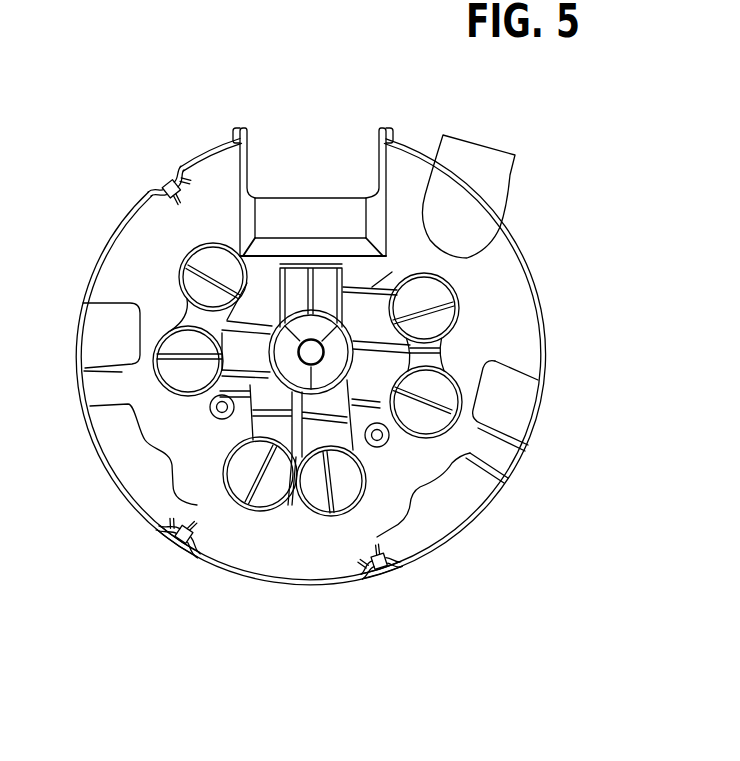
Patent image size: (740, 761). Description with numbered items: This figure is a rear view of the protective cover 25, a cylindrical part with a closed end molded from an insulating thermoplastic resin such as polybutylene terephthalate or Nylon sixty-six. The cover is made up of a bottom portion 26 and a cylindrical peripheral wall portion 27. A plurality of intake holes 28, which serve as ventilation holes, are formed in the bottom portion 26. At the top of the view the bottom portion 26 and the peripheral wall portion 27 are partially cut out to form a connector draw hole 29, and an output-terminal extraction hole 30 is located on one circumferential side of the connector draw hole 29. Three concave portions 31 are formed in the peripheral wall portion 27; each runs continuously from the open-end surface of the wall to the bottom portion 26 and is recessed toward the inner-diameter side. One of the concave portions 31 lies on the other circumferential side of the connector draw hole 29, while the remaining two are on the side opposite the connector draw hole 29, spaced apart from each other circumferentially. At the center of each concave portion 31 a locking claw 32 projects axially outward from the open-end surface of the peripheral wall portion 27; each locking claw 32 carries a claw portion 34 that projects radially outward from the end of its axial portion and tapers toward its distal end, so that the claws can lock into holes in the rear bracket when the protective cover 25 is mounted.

The protective cover 25 is at (96, 94).
The bottom portion 26 is at (498, 284).
The peripheral wall portion 27 is at (546, 316).
The intake holes 28 is at (197, 283).
The connector draw hole 29 is at (338, 160).
The output-terminal extraction hole 30 is at (480, 206).
The concave portions 31 is at (157, 182).
The locking claws 32 is at (172, 176).
The claw portion 34 is at (161, 183).